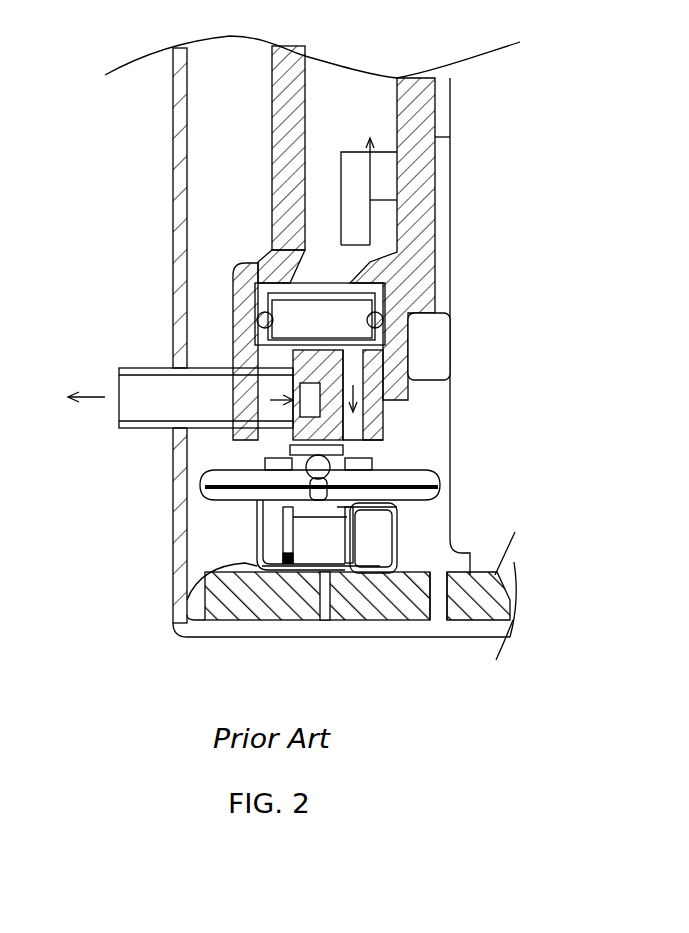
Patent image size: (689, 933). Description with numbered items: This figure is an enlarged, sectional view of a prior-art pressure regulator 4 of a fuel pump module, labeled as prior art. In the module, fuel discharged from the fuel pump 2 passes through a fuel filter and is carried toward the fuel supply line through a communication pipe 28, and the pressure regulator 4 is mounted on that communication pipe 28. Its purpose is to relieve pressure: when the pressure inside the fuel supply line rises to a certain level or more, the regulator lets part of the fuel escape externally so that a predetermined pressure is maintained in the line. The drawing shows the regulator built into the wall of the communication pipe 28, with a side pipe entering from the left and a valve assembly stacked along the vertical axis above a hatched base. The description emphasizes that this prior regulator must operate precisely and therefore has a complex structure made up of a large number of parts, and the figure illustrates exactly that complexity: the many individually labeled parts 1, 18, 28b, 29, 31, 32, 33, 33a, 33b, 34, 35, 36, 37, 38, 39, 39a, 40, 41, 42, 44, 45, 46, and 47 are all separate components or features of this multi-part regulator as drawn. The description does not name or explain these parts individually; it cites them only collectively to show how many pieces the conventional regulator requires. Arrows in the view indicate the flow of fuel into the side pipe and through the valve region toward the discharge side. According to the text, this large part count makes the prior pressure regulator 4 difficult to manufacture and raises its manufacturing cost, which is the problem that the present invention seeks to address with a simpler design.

The inner cylinder 1 is at (170, 151).
The fuel pump 2 is at (490, 76).
The pressure regulator 4 is at (172, 590).
The base portion 18 is at (500, 590).
The communication pipe 28 is at (270, 183).
The recess 28b is at (412, 378).
The passage 29 is at (352, 178).
The cap 31 is at (262, 288).
The O-ring 32 is at (258, 322).
The valve member 33 is at (122, 478).
The valve disc 33a is at (202, 483).
The valve stem 33b is at (240, 536).
The valve body 34 is at (400, 357).
The chamber 35 is at (322, 319).
The valve seat member 36 is at (378, 424).
The guide 37 is at (376, 434).
The port 38 is at (283, 391).
The inlet pipe 39 is at (166, 368).
The inlet 39a is at (118, 372).
The spring seat 40 is at (432, 512).
The seal 41 is at (430, 468).
The spring 42 is at (385, 553).
The ball 44 is at (380, 449).
The pin 45 is at (326, 618).
The outer wall 46 is at (170, 431).
The base plate 47 is at (252, 622).